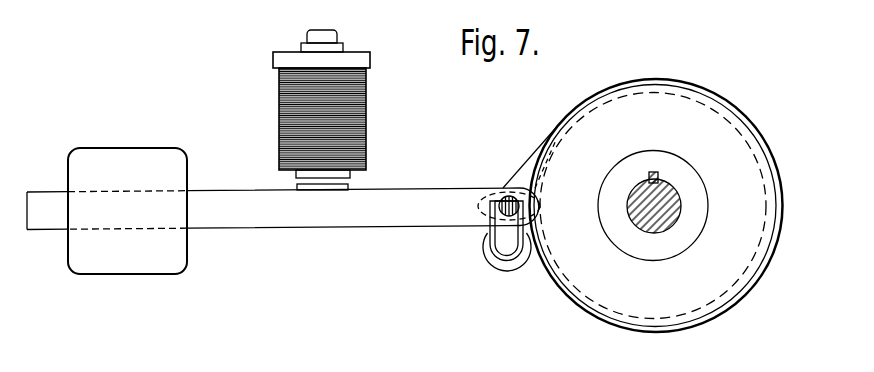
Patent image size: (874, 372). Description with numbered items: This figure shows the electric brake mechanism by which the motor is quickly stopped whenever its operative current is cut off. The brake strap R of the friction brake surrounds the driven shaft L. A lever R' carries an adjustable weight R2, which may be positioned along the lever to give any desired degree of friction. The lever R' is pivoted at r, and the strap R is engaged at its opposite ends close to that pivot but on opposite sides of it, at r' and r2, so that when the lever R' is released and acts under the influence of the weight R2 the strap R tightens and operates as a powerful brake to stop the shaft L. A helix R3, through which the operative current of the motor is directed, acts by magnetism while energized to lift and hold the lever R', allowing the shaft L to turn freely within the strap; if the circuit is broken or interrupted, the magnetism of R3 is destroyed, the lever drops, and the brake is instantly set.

The brake strap R is at (643, 205).
The lever R' is at (283, 209).
The adjustable weight R2 is at (127, 211).
The helix R3 is at (337, 110).
The pivot r is at (509, 220).
The strap engagement point r' is at (498, 206).
The strap engagement point r2 is at (538, 207).
The driven shaft L is at (673, 207).